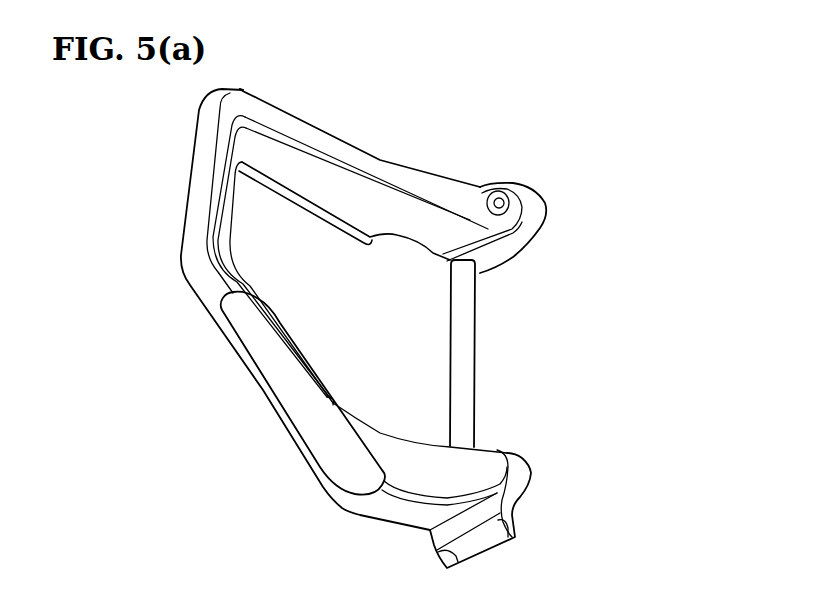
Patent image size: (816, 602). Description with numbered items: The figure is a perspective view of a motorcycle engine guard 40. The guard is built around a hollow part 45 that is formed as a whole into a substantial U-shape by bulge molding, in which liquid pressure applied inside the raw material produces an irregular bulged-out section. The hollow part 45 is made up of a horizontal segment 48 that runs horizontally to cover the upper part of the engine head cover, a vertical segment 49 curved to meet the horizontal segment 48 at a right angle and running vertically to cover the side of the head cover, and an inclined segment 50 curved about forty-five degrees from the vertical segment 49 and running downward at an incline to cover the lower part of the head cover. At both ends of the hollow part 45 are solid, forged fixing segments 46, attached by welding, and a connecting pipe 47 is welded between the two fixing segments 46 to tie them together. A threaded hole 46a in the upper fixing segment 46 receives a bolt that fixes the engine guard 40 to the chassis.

The engine guard 40 is at (407, 160).
The hollow part 45 is at (196, 183).
The fixing segment 46 is at (476, 190).
The threaded hole 46a is at (493, 187).
The connecting pipe 47 is at (468, 350).
The horizontal segment 48 is at (329, 148).
The vertical segment 49 is at (193, 205).
The inclined segment 50 is at (287, 407).